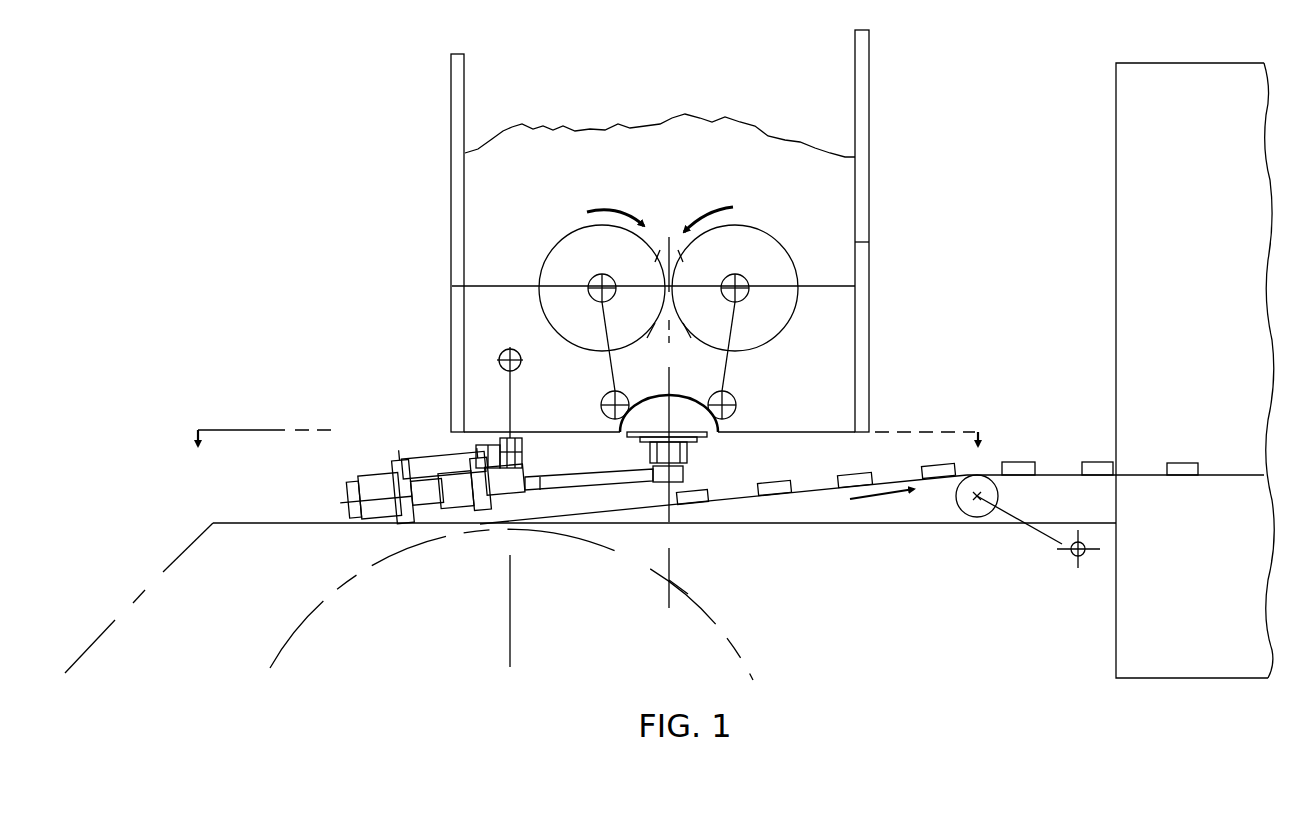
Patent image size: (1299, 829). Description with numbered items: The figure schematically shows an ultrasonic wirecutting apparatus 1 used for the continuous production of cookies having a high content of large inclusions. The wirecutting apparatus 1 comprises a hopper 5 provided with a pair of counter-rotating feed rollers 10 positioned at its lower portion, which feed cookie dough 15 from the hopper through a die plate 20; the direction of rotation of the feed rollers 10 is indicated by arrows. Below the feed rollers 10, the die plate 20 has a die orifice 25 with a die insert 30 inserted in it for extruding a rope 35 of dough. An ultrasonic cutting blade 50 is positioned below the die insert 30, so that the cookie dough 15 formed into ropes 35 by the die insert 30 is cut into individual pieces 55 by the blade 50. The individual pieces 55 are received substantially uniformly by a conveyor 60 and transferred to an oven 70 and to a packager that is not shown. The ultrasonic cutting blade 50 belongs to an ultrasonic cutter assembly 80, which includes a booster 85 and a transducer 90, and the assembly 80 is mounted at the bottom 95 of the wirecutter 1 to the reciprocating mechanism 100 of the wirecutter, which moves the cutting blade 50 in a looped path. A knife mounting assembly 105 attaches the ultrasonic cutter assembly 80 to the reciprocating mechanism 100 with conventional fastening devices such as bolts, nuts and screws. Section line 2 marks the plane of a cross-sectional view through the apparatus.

The ultrasonic wirecutting apparatus 1 is at (428, 192).
The section line 2- 2 is at (587, 456).
The hopper 5 is at (452, 262).
The counter-rotating feed rollers 10 is at (542, 310).
The cookie dough 15 is at (505, 128).
The die plate 20 is at (707, 438).
The die orifice 25 is at (677, 435).
The die insert 30 is at (688, 458).
The rope 35 is at (693, 481).
The ultrasonic cutting blade 50 is at (603, 486).
The individual pieces 55 is at (846, 476).
The conveyor 60 is at (893, 482).
The oven 70 is at (1116, 152).
The ultrasonic cutter assembly 80 is at (394, 478).
The booster 85 is at (478, 522).
The transducer 90 is at (370, 488).
The bottom 95 is at (480, 432).
The reciprocating mechanism 100 is at (511, 432).
The knife mounting assembly 105 is at (430, 436).